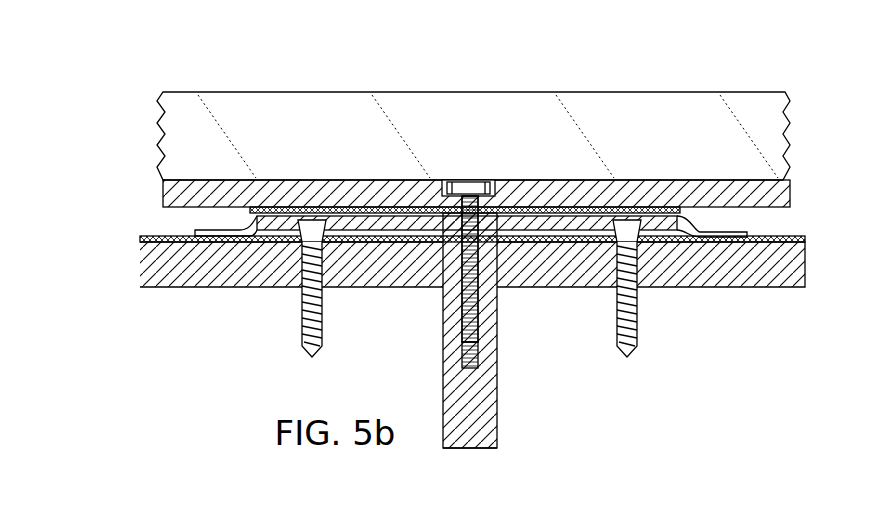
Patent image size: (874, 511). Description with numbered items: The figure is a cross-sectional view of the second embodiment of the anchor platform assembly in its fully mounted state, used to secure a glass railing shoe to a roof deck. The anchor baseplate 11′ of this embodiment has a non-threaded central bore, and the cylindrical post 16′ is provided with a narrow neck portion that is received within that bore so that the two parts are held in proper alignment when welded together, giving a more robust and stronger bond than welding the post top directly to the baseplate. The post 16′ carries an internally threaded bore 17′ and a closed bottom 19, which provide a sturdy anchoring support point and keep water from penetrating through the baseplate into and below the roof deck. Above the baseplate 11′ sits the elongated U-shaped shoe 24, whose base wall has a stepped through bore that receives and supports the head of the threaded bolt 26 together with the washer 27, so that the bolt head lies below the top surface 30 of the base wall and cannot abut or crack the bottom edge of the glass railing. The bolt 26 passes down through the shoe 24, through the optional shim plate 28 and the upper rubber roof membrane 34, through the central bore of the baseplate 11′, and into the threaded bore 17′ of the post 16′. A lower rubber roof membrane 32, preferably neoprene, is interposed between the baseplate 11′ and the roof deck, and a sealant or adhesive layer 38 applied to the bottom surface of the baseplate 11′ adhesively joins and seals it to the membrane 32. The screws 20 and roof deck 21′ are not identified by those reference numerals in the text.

The anchor baseplate 11′ is at (675, 228).
The cylindrical post 16′ is at (502, 415).
The internally threaded bore 17′ is at (474, 362).
The closed bottom 19 is at (466, 448).
The screws 20 is at (303, 322).
The base board 21′ is at (806, 264).
The U-shaped shoe 24 is at (726, 158).
The threaded bolt 26 is at (470, 192).
The washer 27 is at (448, 182).
The shim plate 28 is at (540, 212).
The top surface 30 is at (345, 186).
The rubber roof membrane 32 is at (160, 238).
The rubber roof membrane 34 is at (212, 232).
The adhesive layer 38 is at (675, 230).